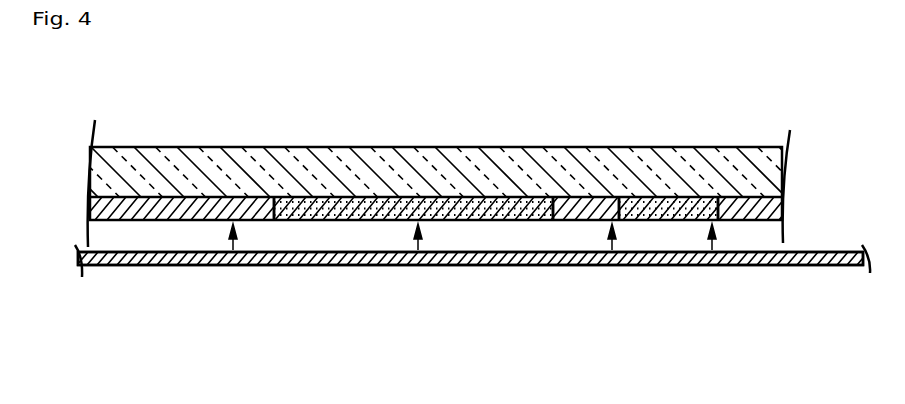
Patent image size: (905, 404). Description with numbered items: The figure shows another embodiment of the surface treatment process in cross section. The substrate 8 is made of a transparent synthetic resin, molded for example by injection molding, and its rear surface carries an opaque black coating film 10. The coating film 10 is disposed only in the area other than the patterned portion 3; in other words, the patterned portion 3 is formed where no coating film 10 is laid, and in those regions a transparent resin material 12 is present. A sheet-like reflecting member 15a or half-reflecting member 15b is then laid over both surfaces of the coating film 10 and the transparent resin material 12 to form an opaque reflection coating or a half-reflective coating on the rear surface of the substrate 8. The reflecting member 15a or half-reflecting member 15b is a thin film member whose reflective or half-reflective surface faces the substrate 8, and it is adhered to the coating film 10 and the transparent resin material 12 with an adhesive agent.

The substrate 8 is at (254, 160).
The patterned portion 3 is at (500, 197).
The transparent resin material 12 is at (334, 205).
The coating film 10 is at (176, 220).
The reflecting member 15a is at (428, 262).
The half-reflecting member 15b is at (470, 258).